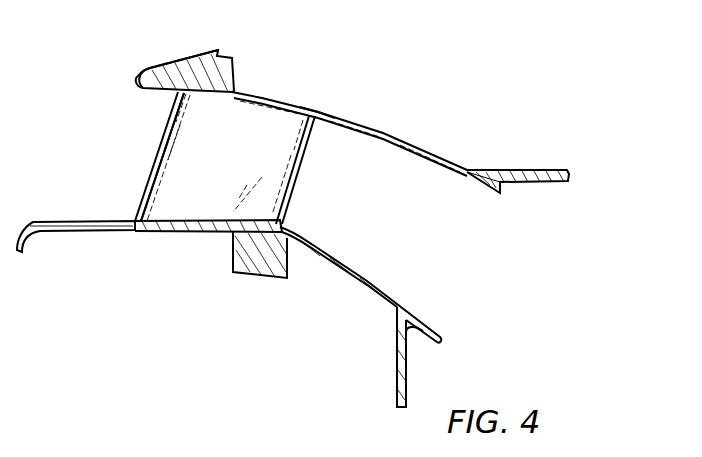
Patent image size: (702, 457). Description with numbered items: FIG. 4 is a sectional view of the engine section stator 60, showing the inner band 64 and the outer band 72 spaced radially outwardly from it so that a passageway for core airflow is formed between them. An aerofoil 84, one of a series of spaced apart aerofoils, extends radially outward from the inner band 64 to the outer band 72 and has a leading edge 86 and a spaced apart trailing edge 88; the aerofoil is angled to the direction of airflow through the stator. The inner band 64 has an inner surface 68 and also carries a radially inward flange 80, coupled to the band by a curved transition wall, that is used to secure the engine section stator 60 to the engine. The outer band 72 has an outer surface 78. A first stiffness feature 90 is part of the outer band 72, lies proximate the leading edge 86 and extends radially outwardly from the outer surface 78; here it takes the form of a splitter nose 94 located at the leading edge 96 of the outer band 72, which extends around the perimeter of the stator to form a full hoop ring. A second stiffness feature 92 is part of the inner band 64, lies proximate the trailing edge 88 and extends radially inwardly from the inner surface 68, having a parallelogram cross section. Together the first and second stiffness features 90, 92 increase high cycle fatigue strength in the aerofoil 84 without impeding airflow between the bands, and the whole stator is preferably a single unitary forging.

The engine section stator 60 is at (522, 113).
The inner band 64 is at (135, 234).
The inner surface 68 is at (183, 231).
The outer band 72 is at (263, 96).
The outer surface 78 is at (303, 112).
The radially inward flange 80 is at (397, 367).
The aerofoil 84 is at (187, 130).
The leading edge 86 is at (155, 166).
The trailing edge 88 is at (298, 175).
The first stiffness feature 90 is at (205, 64).
The second stiffness feature 92 is at (272, 258).
The splitter nose 94 is at (153, 67).
The leading edge 96 is at (138, 77).